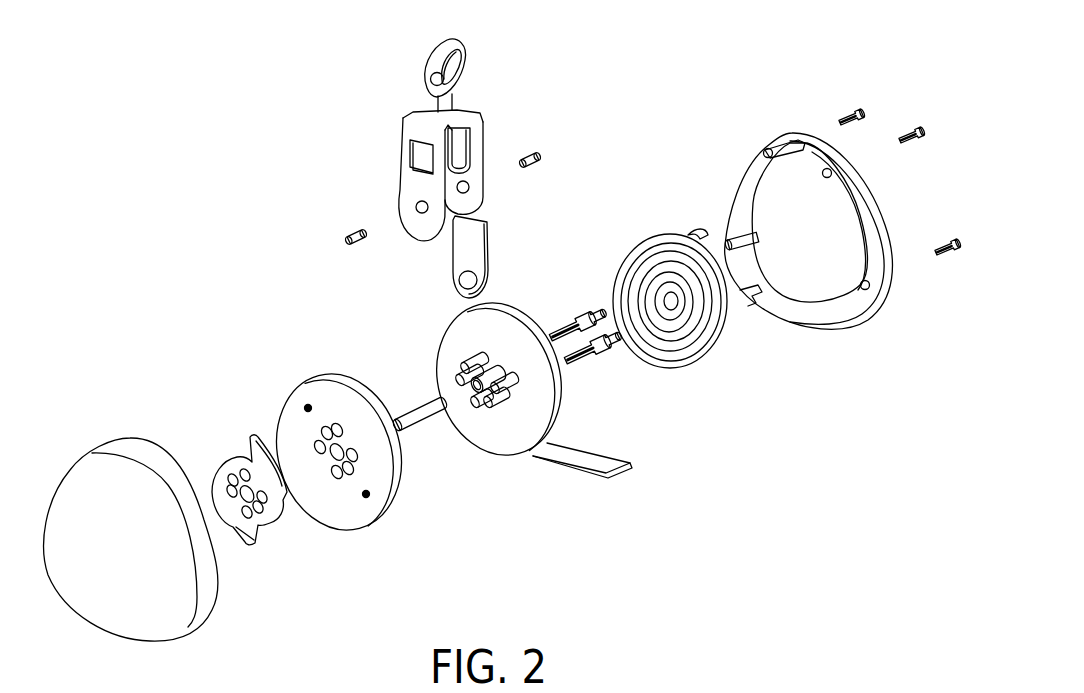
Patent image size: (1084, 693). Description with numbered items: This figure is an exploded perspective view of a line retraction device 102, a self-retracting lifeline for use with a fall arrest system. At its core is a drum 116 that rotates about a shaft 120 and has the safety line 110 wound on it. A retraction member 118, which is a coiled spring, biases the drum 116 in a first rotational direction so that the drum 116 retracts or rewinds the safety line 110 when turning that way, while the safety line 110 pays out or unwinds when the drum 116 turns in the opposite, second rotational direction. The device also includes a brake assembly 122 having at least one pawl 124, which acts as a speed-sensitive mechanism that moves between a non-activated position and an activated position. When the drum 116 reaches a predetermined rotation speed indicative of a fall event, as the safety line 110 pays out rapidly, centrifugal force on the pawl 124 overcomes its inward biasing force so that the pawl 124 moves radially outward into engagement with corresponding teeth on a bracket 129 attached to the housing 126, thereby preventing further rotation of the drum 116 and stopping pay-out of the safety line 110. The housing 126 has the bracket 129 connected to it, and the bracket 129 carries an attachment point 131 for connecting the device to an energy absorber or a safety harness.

The line retraction device 102 is at (652, 98).
The safety line 110 is at (594, 455).
The drum 116 is at (333, 374).
The retraction member 118 is at (648, 282).
The shaft 120 is at (428, 428).
The brake assembly 122 is at (288, 566).
The pawl 124 is at (217, 481).
The housing 126 is at (806, 133).
The bracket 129 is at (418, 155).
The attachment point 131 is at (437, 50).